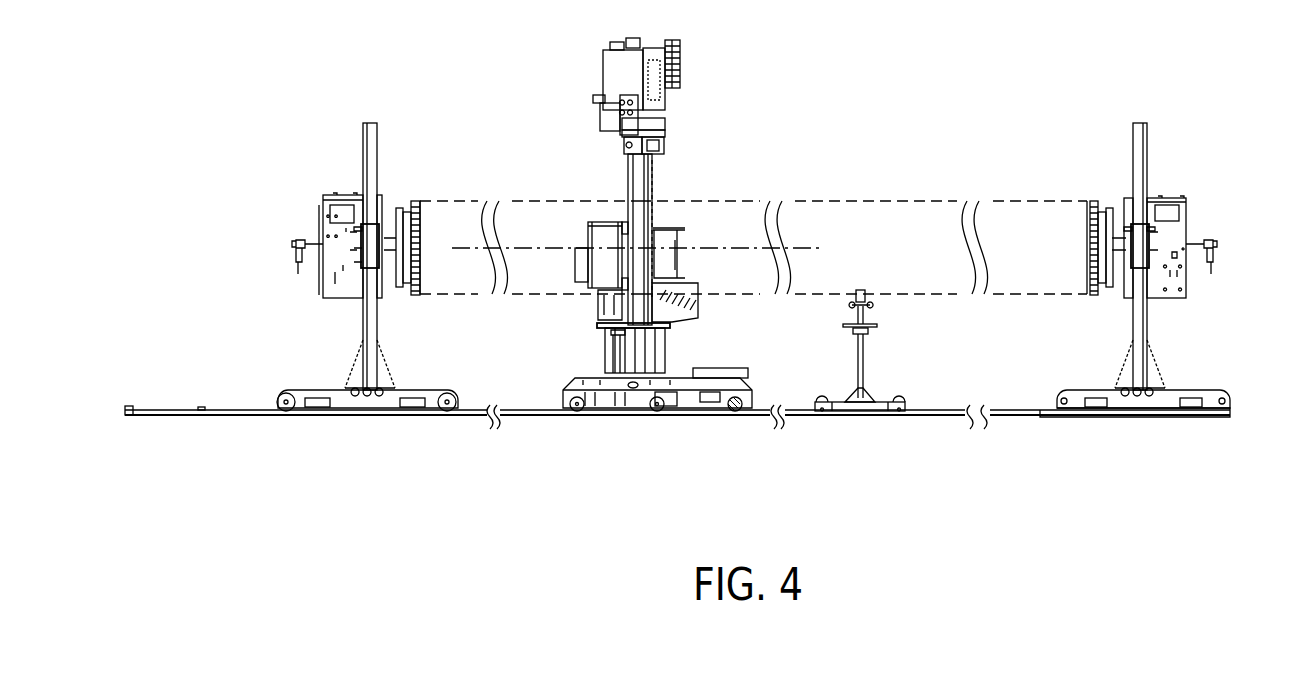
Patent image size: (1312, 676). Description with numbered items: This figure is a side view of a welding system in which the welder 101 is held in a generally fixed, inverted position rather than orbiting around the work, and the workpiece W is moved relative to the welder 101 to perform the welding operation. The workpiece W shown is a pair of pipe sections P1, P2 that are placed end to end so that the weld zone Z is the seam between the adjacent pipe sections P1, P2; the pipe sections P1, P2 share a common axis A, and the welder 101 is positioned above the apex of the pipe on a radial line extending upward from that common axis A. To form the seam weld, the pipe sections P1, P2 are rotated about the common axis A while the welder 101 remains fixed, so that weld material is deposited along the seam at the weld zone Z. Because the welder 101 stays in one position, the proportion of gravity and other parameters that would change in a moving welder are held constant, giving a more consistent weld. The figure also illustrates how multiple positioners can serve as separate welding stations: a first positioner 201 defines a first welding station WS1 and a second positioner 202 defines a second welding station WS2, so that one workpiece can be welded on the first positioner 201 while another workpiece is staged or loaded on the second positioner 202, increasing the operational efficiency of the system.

The first welding station WS1 is at (372, 106).
The second welding station WS2 is at (1138, 106).
The first positioner 201 is at (326, 180).
The second positioner 202 is at (1184, 181).
The welder 101 is at (668, 135).
The weld zone Z is at (652, 218).
The workpiece W is at (520, 195).
The first pipe section P1 is at (556, 216).
The second pipe section P2 is at (707, 215).
The common axis A is at (553, 252).